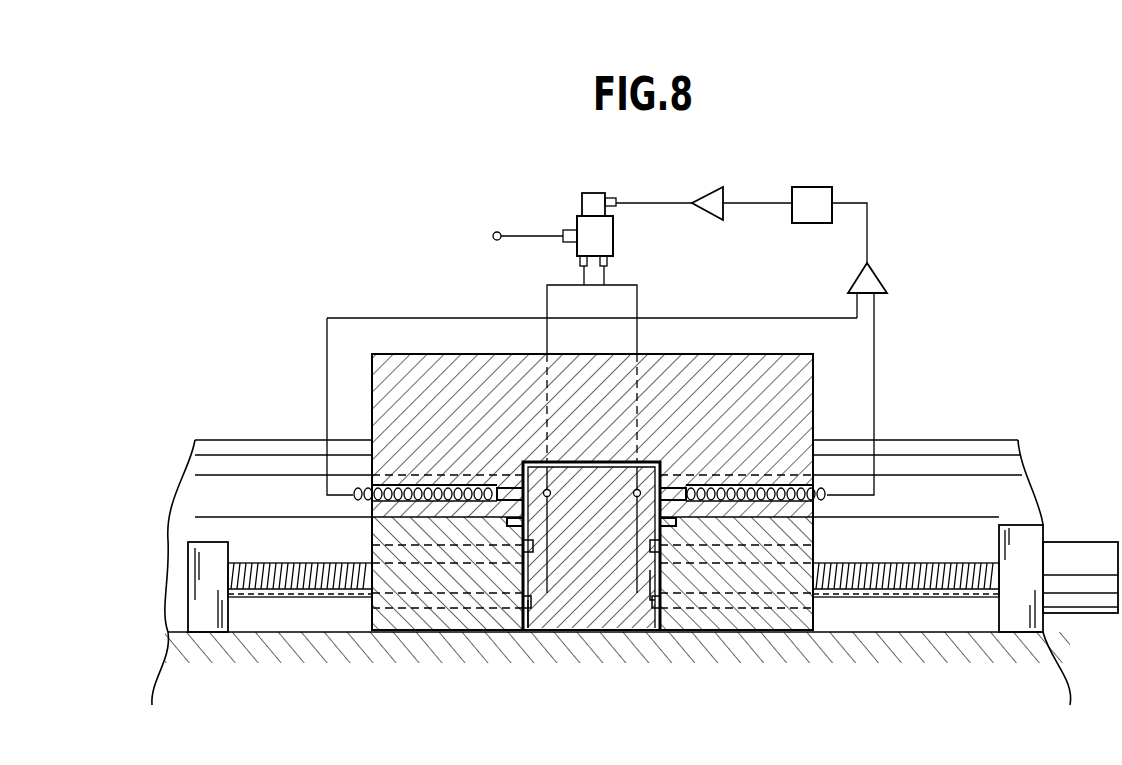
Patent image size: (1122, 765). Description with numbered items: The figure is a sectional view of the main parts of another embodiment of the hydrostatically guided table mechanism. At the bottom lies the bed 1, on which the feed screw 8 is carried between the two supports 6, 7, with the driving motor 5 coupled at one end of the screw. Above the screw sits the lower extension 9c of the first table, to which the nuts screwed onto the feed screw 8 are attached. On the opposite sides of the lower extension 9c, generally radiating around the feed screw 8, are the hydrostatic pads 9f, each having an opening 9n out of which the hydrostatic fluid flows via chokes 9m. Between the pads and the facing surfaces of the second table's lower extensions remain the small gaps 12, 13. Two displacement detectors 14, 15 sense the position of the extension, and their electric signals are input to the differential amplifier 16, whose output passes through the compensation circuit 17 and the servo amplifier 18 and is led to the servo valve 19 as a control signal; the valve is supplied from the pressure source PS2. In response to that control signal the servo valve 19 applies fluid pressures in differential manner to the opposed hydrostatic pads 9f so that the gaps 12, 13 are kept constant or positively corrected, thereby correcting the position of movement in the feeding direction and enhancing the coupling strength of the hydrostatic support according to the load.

The bed 1 is at (267, 648).
The driving motor 5 is at (1103, 600).
The support 6 is at (1032, 540).
The support 7 is at (205, 557).
The feed screw 8 is at (955, 592).
The lower extension 9c is at (613, 610).
The hydrostatic pads 9f is at (538, 610).
The chokes 9m is at (542, 607).
The opening 9n is at (520, 600).
The small gap 12 is at (653, 603).
The small gap 13 is at (527, 628).
The displacement detector 14 is at (513, 490).
The displacement detector 15 is at (693, 462).
The differential amplifier 16 is at (870, 281).
The compensation circuit 17 is at (818, 192).
The servo amplifier 18 is at (715, 197).
The servo valve 19 is at (587, 230).
The pressure source PS2 is at (523, 224).